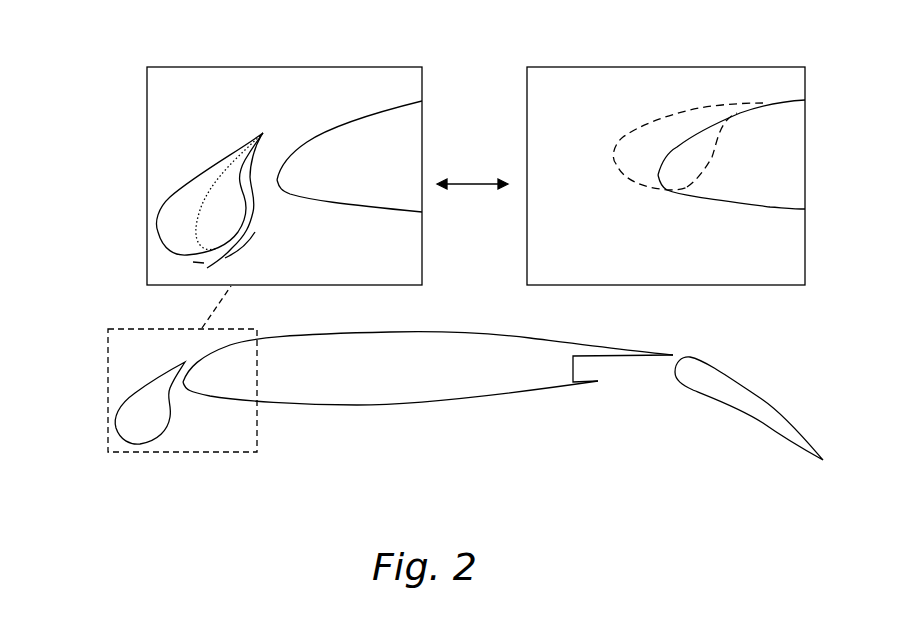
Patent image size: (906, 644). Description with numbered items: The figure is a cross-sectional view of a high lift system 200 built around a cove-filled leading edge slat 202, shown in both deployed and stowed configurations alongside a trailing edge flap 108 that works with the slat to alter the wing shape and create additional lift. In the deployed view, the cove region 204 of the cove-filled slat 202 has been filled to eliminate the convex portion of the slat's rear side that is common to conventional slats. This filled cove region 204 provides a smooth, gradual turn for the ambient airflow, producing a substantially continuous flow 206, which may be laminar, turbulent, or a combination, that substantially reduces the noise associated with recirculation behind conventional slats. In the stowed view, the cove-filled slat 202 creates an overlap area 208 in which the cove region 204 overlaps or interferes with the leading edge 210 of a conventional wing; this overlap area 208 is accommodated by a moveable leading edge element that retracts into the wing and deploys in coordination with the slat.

The high lift system 200 is at (120, 65).
The cove-filled leading edge slat 202 is at (203, 185).
The cove region 204 is at (240, 223).
The substantially continuous flow 206 is at (258, 218).
The overlap area 208 is at (678, 173).
The leading edge 210 is at (670, 153).
The flap 108 is at (723, 392).